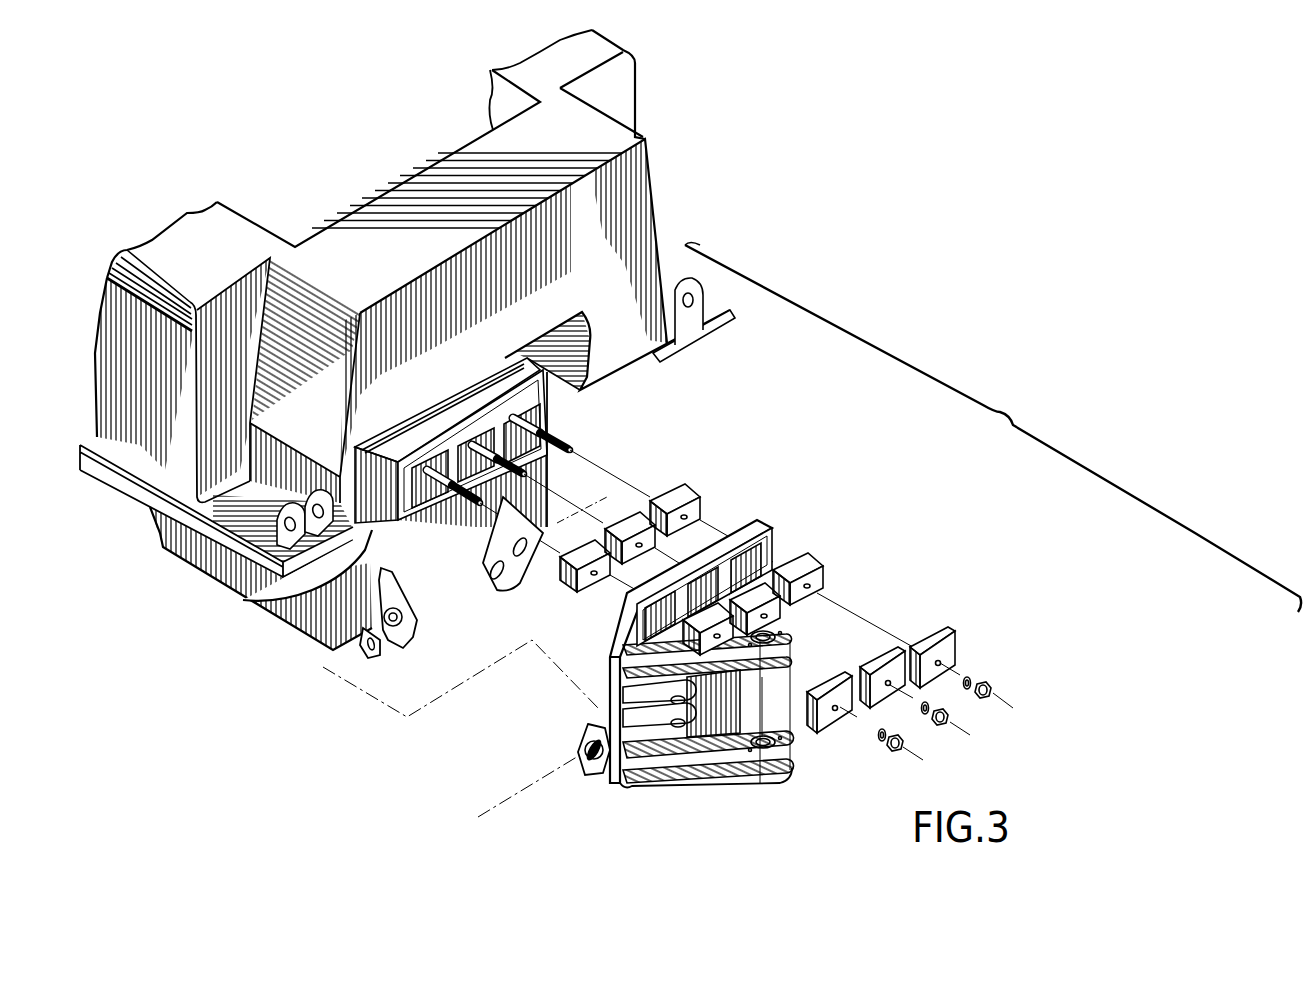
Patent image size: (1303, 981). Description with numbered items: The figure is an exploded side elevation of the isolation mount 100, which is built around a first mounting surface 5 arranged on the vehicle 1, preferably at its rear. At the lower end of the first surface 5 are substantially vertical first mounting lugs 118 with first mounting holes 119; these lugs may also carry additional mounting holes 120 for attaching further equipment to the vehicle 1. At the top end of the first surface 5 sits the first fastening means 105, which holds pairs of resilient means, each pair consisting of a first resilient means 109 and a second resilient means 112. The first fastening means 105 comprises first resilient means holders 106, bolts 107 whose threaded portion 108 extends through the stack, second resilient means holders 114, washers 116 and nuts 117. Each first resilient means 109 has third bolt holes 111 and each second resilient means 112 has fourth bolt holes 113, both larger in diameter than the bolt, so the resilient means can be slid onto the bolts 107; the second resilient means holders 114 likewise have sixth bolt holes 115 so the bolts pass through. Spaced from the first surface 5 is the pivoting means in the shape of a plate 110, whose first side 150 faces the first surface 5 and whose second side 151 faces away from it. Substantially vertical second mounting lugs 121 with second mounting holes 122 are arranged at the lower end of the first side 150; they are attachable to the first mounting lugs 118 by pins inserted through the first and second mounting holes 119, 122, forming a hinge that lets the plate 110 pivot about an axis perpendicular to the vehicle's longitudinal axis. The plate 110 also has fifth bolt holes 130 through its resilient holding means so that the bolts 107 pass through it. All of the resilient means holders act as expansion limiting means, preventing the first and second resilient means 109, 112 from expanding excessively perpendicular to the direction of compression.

The vehicle 1 is at (600, 222).
The first mounting surface 5 is at (245, 598).
The isolation mount 100 is at (1001, 412).
The first fastening means 105 is at (560, 405).
The first resilient means holders 106 is at (438, 478).
The bolts 107 is at (433, 440).
The threaded portion 108 is at (470, 480).
The first resilient means 109 is at (700, 487).
The plate 110 is at (797, 665).
The third bolt holes 111 is at (727, 513).
The second resilient means 112 is at (780, 560).
The fourth bolt holes 113 is at (800, 583).
The second resilient means holders 114 is at (950, 650).
The sixth bolt holes 115 is at (940, 663).
The washers 116 is at (970, 678).
The nuts 117 is at (990, 693).
The first mounting lugs 118 is at (425, 662).
The first mounting holes 119 is at (427, 620).
The additional mounting holes 120 is at (362, 641).
The second mounting lugs 121 is at (582, 727).
The second mounting holes 122 is at (590, 760).
The fifth bolt holes 130 is at (778, 548).
The first side 150 is at (594, 706).
The second side 151 is at (640, 738).